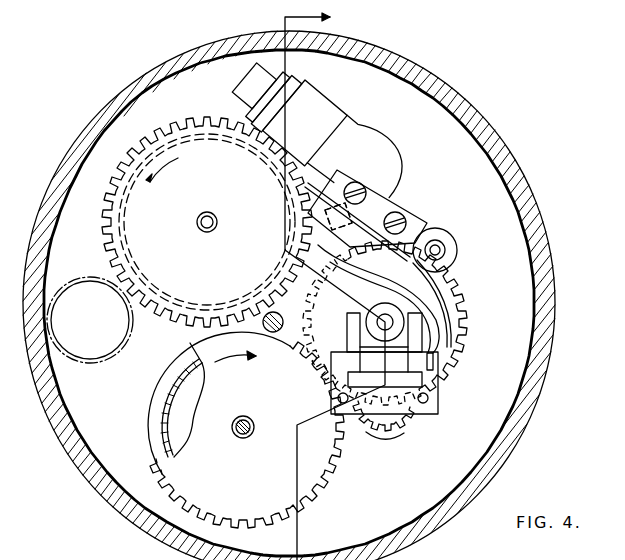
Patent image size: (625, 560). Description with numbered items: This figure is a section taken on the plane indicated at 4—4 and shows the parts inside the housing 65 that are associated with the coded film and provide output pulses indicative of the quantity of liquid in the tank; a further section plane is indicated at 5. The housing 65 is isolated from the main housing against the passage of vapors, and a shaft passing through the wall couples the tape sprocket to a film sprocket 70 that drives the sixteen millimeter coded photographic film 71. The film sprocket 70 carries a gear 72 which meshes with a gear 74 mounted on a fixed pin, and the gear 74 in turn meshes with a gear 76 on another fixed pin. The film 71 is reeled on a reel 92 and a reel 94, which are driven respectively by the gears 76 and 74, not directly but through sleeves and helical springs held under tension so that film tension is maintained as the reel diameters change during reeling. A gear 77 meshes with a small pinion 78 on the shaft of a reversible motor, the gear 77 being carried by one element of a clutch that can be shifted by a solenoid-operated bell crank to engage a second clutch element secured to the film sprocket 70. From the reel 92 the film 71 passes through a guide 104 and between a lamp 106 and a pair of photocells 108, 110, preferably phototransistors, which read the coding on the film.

The housing 65 is at (35, 241).
The gear 76 is at (112, 240).
The reel 92 is at (150, 287).
The section line 5- 5 is at (322, 286).
The lamp 106 is at (401, 177).
The photocell 108 is at (326, 221).
The photocell 110 is at (338, 216).
The photographic film 71 is at (309, 183).
The guide 104 is at (414, 236).
The gear 72 is at (451, 266).
The film sprocket 70 is at (455, 326).
The small pinion 78 is at (268, 312).
The gear 77 is at (302, 386).
The gear 74 is at (190, 343).
The reel 94 is at (177, 410).
The section line 4- 4 is at (117, 556).